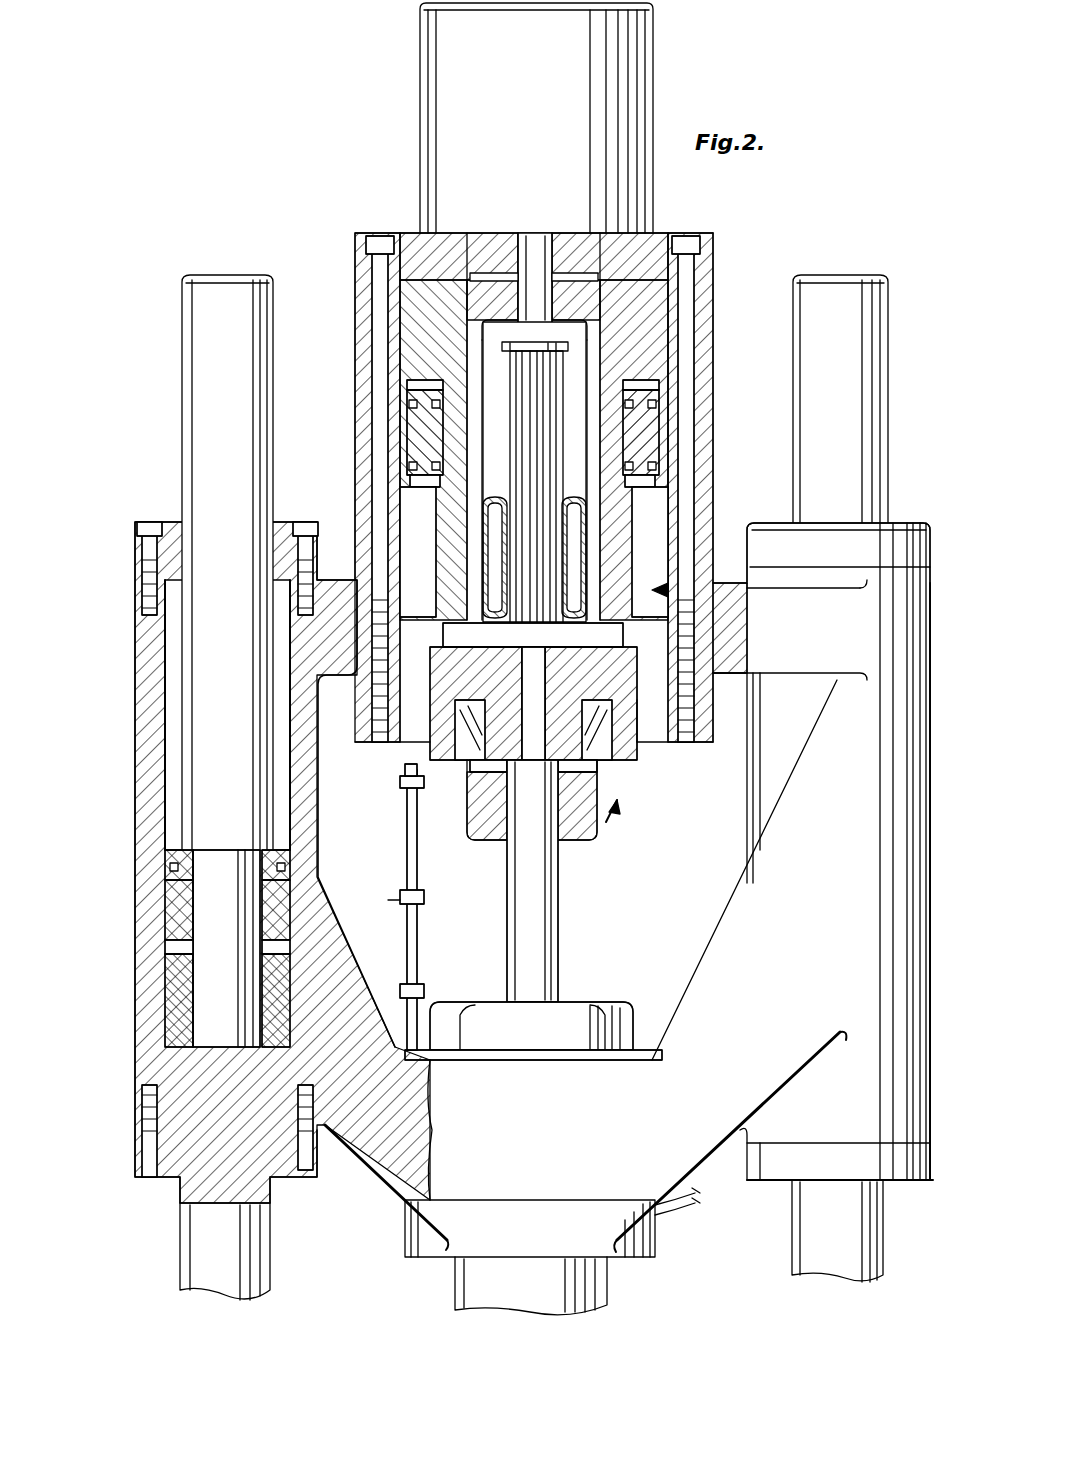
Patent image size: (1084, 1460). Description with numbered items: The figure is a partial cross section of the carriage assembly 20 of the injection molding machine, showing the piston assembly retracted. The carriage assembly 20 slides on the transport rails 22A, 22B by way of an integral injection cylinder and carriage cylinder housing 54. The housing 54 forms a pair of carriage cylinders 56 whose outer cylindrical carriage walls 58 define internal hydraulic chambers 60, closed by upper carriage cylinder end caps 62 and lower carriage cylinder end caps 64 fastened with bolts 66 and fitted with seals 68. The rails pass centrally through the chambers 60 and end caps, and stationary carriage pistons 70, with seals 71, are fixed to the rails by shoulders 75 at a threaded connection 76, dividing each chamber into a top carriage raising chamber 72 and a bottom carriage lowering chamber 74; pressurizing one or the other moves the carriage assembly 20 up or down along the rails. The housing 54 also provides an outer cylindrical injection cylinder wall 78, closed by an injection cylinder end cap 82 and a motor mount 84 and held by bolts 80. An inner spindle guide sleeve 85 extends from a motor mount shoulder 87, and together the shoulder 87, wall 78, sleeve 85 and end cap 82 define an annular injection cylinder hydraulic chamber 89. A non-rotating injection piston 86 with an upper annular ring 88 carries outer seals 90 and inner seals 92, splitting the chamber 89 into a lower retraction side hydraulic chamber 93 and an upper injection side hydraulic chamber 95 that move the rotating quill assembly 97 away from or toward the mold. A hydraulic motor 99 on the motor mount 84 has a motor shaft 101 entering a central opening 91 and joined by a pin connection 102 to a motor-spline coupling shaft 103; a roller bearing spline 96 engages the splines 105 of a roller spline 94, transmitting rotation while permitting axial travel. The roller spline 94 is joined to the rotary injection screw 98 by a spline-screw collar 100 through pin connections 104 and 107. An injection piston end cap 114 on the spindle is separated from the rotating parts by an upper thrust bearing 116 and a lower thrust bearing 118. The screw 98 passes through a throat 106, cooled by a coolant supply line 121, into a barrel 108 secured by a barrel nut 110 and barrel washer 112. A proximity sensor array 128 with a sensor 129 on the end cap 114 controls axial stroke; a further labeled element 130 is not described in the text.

The carriage assembly 20 is at (157, 398).
The transport rail 22A is at (870, 397).
The transport rail 22B is at (197, 462).
The integral injection cylinder and carriage cylinder housing 54 is at (800, 997).
The carriage cylinders 56 is at (917, 625).
The outer cylindrical carriage walls 58 is at (138, 787).
The internal hydraulic chambers 60 is at (176, 771).
The upper carriage cylinder end caps 62 is at (925, 538).
The lower carriage cylinder end caps 64 is at (930, 1172).
The bolts 66 is at (330, 538).
The seals 68 is at (275, 546).
The stationary carriage pistons 70 is at (175, 905).
The seals 71 is at (165, 868).
The top carriage raising chambers 72 is at (172, 671).
The bottom carriage lowering chambers 74 is at (165, 962).
The shoulders 75 is at (282, 846).
The threaded connection 76 is at (224, 1045).
The outer cylindrical injection cylinder wall 78 is at (706, 302).
The bolts 80 is at (378, 297).
The injection cylinder end cap 82 is at (700, 735).
The motor mount 84 is at (402, 240).
The inner spindle guide sleeve 85 is at (683, 500).
The injection piston 86 is at (440, 582).
The motor mount shoulder 87 is at (660, 396).
The upper annular ring 88 is at (412, 425).
The annular injection cylinder hydraulic chamber 89 is at (718, 600).
The outer seals 90 is at (662, 432).
The central opening 91 is at (560, 332).
The inner seals 92 is at (420, 455).
The lower retraction side hydraulic chamber 93 is at (660, 557).
The roller spline 94 is at (500, 357).
The upper injection side hydraulic chamber 95 is at (410, 398).
The roller bearing spline 96 is at (571, 498).
The rotating quill assembly 97 is at (617, 830).
The rotary injection screw 98 is at (520, 900).
The hydraulic motor 99 is at (653, 47).
The spline-screw collar 100 is at (580, 832).
The motor shaft 101 is at (528, 232).
The pin connection 102 is at (565, 272).
The motor-spline coupling shaft 103 is at (490, 320).
The pin connection 104 is at (526, 691).
The splines 105 is at (557, 370).
The throat 106 is at (550, 1159).
The pin connection 107 is at (617, 800).
The barrel 108 is at (522, 1268).
The barrel nut 110 is at (615, 1012).
The barrel washer 112 is at (648, 1046).
The injection piston end cap 114 is at (600, 795).
The upper thrust bearing 116 is at (591, 703).
The lower thrust bearing 118 is at (463, 772).
The coolant supply line 121 is at (690, 1215).
The proximity sensor array 128 is at (432, 920).
The sensor 129 is at (627, 790).
The chute wall 130 is at (400, 990).